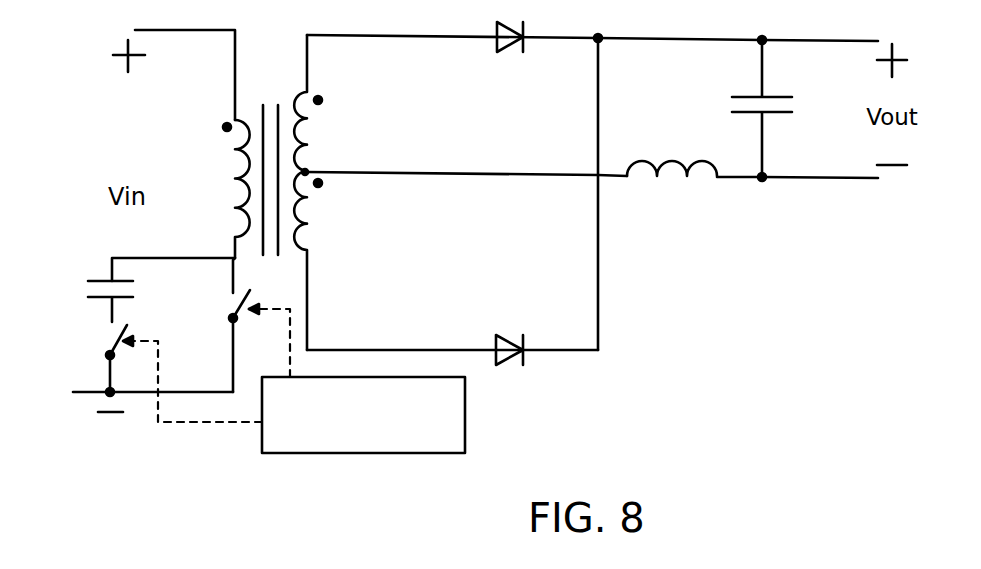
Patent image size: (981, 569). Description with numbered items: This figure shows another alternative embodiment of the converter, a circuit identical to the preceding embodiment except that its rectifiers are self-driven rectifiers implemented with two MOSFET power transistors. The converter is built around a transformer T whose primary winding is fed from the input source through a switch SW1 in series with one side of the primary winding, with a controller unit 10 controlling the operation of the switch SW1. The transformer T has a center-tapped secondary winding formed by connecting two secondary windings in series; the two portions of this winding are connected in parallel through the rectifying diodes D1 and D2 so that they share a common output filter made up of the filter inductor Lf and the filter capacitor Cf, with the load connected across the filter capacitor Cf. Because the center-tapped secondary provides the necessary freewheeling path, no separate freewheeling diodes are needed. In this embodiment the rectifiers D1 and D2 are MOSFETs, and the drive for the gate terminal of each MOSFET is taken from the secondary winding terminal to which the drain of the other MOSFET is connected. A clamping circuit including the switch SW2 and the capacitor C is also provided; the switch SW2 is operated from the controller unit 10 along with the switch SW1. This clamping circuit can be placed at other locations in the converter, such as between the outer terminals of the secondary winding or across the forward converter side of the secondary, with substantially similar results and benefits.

The controller unit 10 is at (465, 433).
The transformer T is at (266, 192).
The capacitor C is at (96, 301).
The switch SW1 is at (206, 340).
The switch SW2 is at (80, 358).
The rectifying diode D1 is at (515, 56).
The rectifying diode D2 is at (514, 369).
The filter inductor Lf is at (672, 189).
The filter capacitor Cf is at (743, 108).